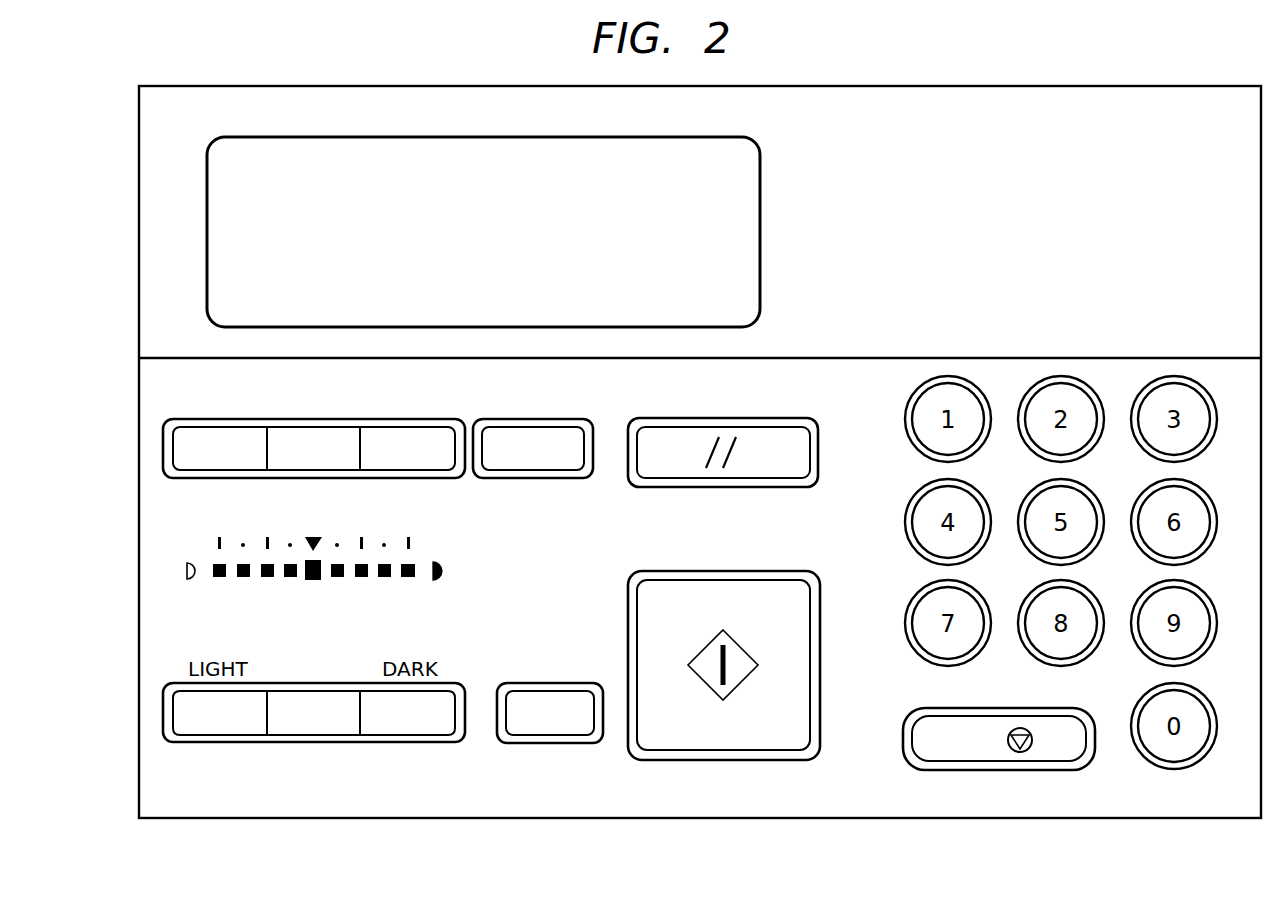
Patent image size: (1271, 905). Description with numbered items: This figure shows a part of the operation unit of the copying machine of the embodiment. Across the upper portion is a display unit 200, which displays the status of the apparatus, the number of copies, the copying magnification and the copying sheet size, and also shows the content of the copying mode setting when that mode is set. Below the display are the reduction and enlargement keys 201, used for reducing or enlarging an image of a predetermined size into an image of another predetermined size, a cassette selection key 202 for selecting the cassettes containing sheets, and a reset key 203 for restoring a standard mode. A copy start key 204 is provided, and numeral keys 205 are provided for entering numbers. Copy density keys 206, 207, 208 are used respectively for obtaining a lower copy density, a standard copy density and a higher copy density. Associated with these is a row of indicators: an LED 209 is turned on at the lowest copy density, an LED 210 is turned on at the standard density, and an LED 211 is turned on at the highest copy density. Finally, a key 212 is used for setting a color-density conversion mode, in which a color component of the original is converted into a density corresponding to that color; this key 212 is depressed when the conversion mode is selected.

The display unit 200 is at (752, 182).
The reduction and enlargement keys 201 is at (208, 478).
The cassette selection key 202 is at (572, 478).
The reset key 203 is at (780, 416).
The copy start key 204 is at (781, 742).
The numeral keys 205 is at (895, 731).
The copy density key 206 is at (246, 728).
The copy density key 207 is at (344, 728).
The copy density key 208 is at (436, 728).
The LED 209 is at (219, 577).
The LED 210 is at (313, 580).
The LED 211 is at (408, 577).
The color-density conversion mode key 212 is at (572, 728).